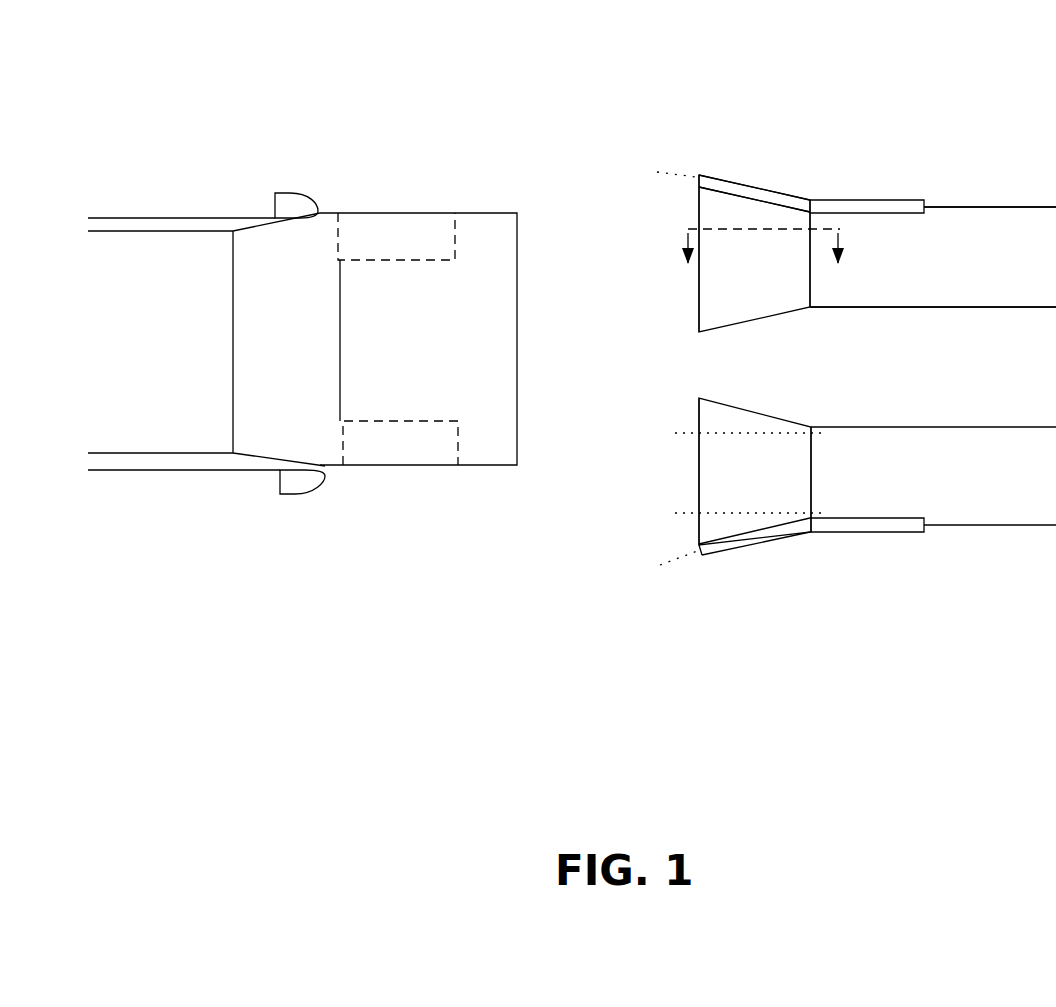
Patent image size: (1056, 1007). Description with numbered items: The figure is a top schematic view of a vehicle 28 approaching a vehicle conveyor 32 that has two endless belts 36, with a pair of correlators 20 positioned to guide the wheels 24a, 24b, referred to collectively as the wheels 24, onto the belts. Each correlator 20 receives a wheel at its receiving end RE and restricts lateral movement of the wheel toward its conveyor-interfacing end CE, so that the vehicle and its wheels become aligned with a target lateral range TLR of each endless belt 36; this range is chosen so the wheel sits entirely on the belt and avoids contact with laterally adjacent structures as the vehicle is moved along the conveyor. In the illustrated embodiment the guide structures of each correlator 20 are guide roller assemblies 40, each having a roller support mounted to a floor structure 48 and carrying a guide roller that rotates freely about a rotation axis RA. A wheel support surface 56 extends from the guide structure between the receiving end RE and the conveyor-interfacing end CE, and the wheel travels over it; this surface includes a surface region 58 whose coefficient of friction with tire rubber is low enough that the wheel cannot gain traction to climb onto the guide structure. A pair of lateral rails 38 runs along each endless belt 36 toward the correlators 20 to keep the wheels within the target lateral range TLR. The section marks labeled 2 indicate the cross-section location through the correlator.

The vehicle 28 is at (150, 216).
The wheels 24 is at (418, 334).
The wheel 24a is at (388, 232).
The wheel 24b is at (397, 455).
The correlator 20 is at (736, 130).
The vehicle conveyor 32 is at (935, 138).
The endless belt 36 is at (1015, 222).
The lateral rails 38 is at (900, 199).
The guide roller assembly 40 is at (759, 181).
The wheel support surface 56 is at (714, 200).
The surface region 58 is at (766, 270).
The floor structure 48 is at (651, 268).
The section line 2- 2 is at (763, 263).
The rotation axis RA is at (680, 176).
The receiving end RE is at (697, 307).
The conveyor-interfacing end CE is at (815, 294).
The target lateral range TLR is at (663, 433).